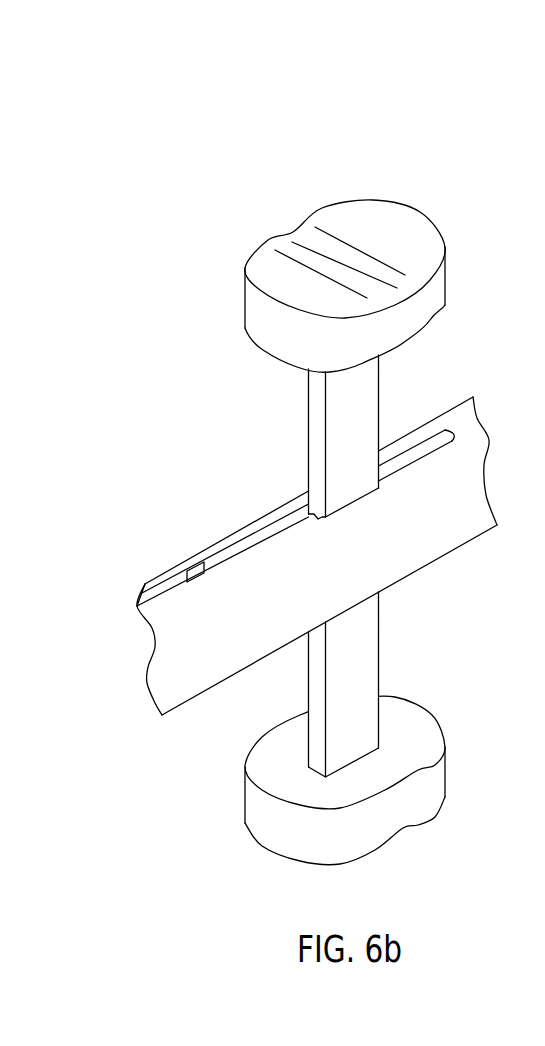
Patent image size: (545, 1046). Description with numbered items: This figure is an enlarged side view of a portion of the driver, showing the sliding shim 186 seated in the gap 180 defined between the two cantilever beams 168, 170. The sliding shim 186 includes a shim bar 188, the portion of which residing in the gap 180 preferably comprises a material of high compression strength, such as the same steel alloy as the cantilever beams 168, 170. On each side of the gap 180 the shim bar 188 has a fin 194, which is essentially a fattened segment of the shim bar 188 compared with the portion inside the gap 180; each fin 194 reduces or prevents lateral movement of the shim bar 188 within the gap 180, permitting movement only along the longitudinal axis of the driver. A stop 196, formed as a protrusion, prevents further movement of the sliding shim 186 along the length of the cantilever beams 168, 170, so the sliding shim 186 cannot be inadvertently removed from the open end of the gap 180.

The sliding shim 186 is at (388, 122).
The shim bar 188 is at (380, 410).
The cantilever beam 168 is at (253, 592).
The cantilever beam 170 is at (226, 538).
The stop 196 is at (199, 565).
The gap 180 is at (142, 610).
The fin 194 is at (342, 508).